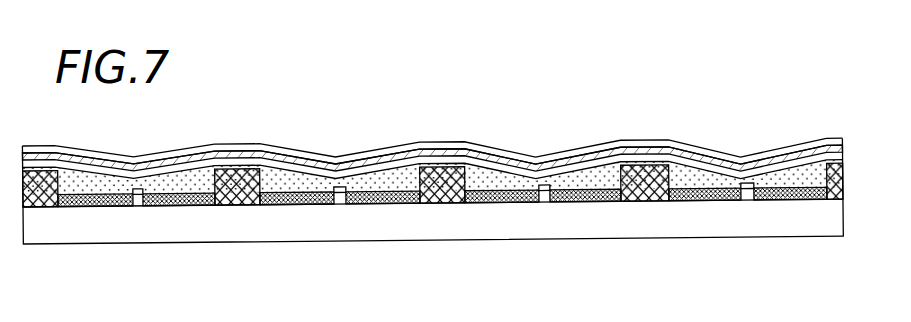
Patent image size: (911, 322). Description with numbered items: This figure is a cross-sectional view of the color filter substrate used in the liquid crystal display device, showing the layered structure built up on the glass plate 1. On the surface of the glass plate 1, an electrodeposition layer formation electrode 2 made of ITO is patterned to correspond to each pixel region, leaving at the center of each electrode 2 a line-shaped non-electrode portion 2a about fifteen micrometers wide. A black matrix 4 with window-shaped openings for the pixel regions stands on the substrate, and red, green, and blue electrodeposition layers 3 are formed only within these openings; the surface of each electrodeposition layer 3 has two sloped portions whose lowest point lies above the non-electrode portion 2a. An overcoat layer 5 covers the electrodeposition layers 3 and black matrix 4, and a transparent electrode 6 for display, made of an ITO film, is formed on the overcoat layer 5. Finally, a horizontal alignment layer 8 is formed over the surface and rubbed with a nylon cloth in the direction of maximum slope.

The glass plate 1 is at (833, 227).
The electrodeposition layer formation electrode 2 is at (790, 198).
The line-shaped non-electrode portion 2a is at (745, 197).
The electrodeposition layer 3 is at (813, 167).
The black matrix 4 is at (642, 162).
The overcoat layer 5 is at (588, 200).
The transparent electrode 6 is at (789, 150).
The horizontal alignment layer 8 is at (708, 142).